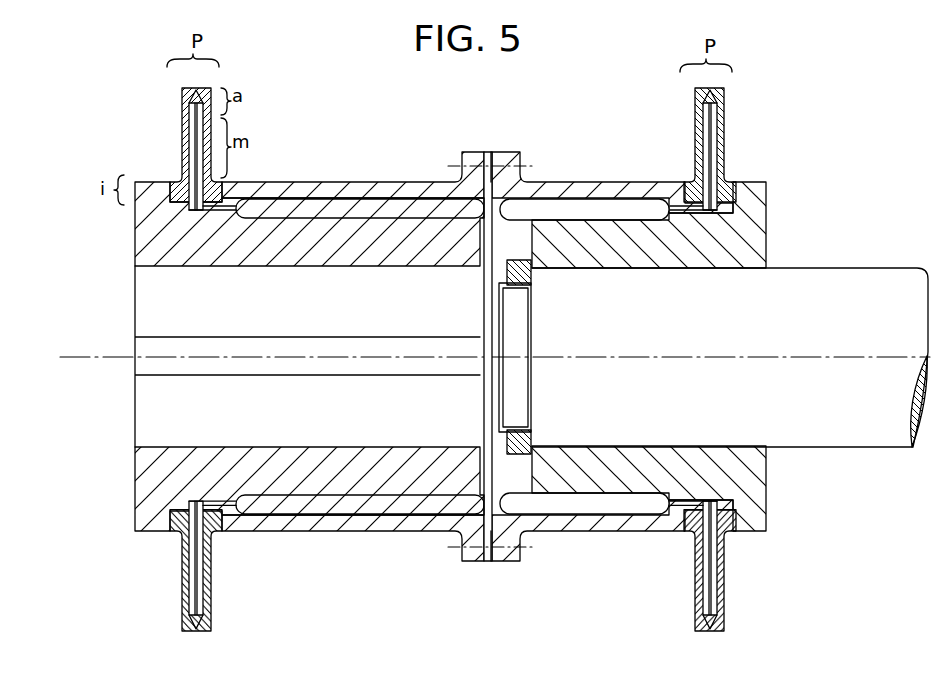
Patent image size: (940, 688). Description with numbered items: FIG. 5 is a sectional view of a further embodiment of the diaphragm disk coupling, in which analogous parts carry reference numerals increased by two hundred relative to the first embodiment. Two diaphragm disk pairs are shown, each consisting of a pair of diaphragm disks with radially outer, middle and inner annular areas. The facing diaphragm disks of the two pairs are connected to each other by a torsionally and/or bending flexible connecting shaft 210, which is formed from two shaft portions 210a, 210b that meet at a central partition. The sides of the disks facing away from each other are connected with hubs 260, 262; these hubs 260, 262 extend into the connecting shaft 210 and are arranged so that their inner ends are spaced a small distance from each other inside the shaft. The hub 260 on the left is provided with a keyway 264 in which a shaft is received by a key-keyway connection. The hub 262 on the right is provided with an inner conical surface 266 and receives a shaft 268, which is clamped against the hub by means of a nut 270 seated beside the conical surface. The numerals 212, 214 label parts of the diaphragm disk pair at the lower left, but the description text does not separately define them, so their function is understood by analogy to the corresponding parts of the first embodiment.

The connecting shaft 210 is at (477, 329).
The shaft portion 210a is at (330, 182).
The shaft portion 210b is at (611, 182).
The hub 260 is at (155, 236).
The hub 262 is at (752, 250).
The keyway 264 is at (185, 372).
The inner conical surface 266 is at (700, 446).
The shaft 268 is at (873, 280).
The nut 270 is at (519, 445).
The insulating sleeve 212 is at (178, 577).
The electrode pin 214 is at (207, 580).